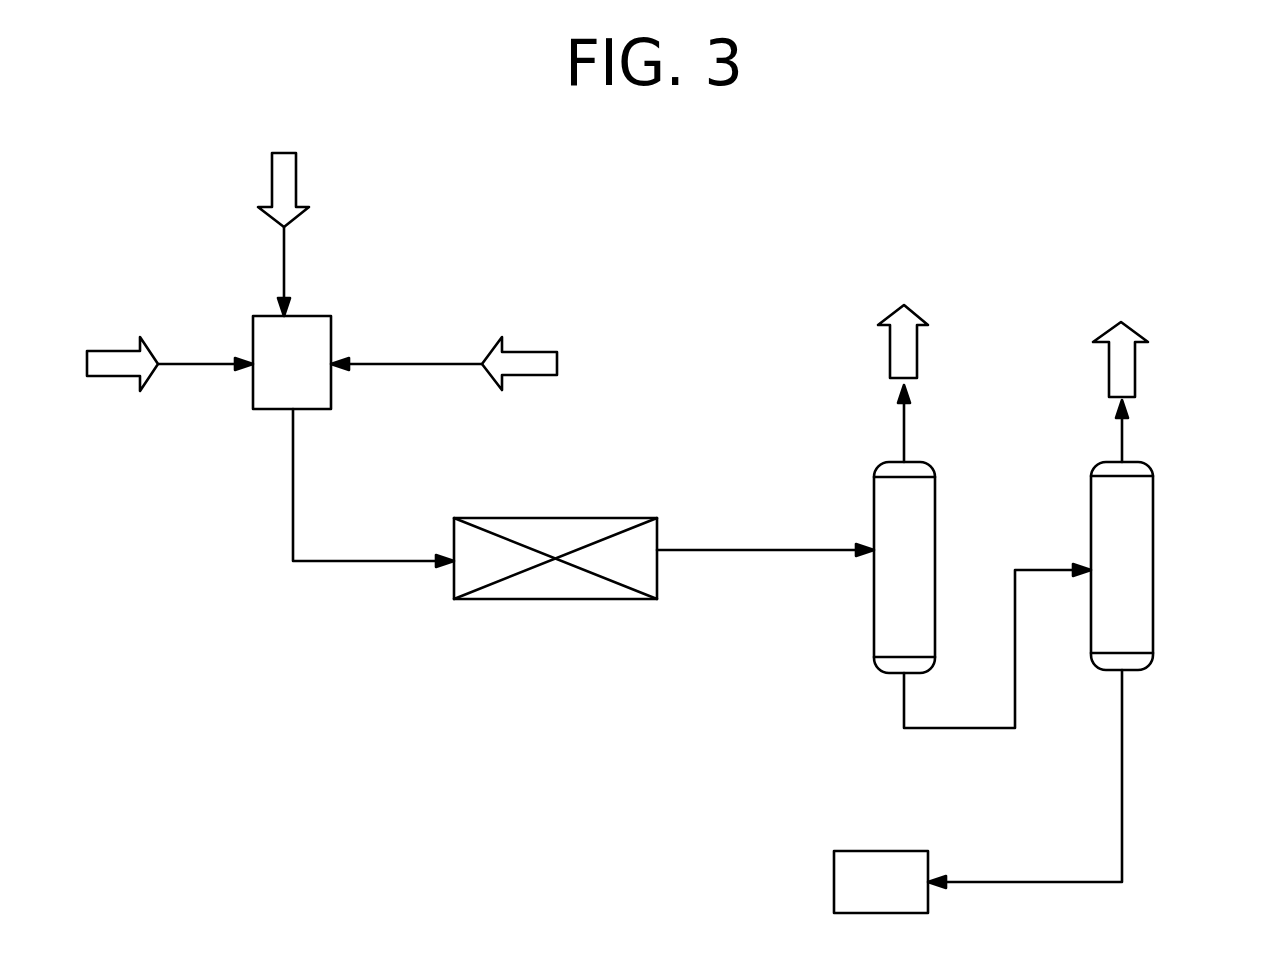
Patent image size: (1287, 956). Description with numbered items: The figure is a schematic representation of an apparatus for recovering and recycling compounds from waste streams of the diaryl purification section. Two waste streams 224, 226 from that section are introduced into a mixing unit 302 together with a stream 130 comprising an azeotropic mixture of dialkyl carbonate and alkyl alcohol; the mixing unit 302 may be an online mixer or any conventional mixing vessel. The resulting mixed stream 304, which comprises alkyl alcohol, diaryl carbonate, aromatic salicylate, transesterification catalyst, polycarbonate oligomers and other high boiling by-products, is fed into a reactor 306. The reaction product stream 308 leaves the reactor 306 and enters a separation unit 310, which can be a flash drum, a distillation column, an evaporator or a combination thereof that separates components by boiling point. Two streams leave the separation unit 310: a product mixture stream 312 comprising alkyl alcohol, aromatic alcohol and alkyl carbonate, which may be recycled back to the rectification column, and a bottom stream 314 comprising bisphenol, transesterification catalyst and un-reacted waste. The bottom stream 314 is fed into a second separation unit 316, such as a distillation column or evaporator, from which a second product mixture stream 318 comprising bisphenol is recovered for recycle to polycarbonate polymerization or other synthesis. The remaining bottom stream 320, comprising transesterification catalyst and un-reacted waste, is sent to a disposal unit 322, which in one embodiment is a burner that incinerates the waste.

The stream comprising an azeotropic mixture of dialkyl carbonate and alkyl alcohol 130 is at (138, 340).
The waste stream 224 is at (510, 348).
The waste stream 226 is at (287, 257).
The mixing unit 302 is at (252, 333).
The mixed stream 304 is at (294, 522).
The reactor 306 is at (562, 597).
The reaction product stream 308 is at (678, 547).
The separation unit 310 is at (872, 585).
The product mixture stream 312 is at (890, 365).
The bottom stream 314 is at (904, 700).
The second separation unit 316 is at (1155, 543).
The second product mixture stream 318 is at (1107, 370).
The bottom stream 320 is at (1125, 765).
The disposal unit 322 is at (831, 895).